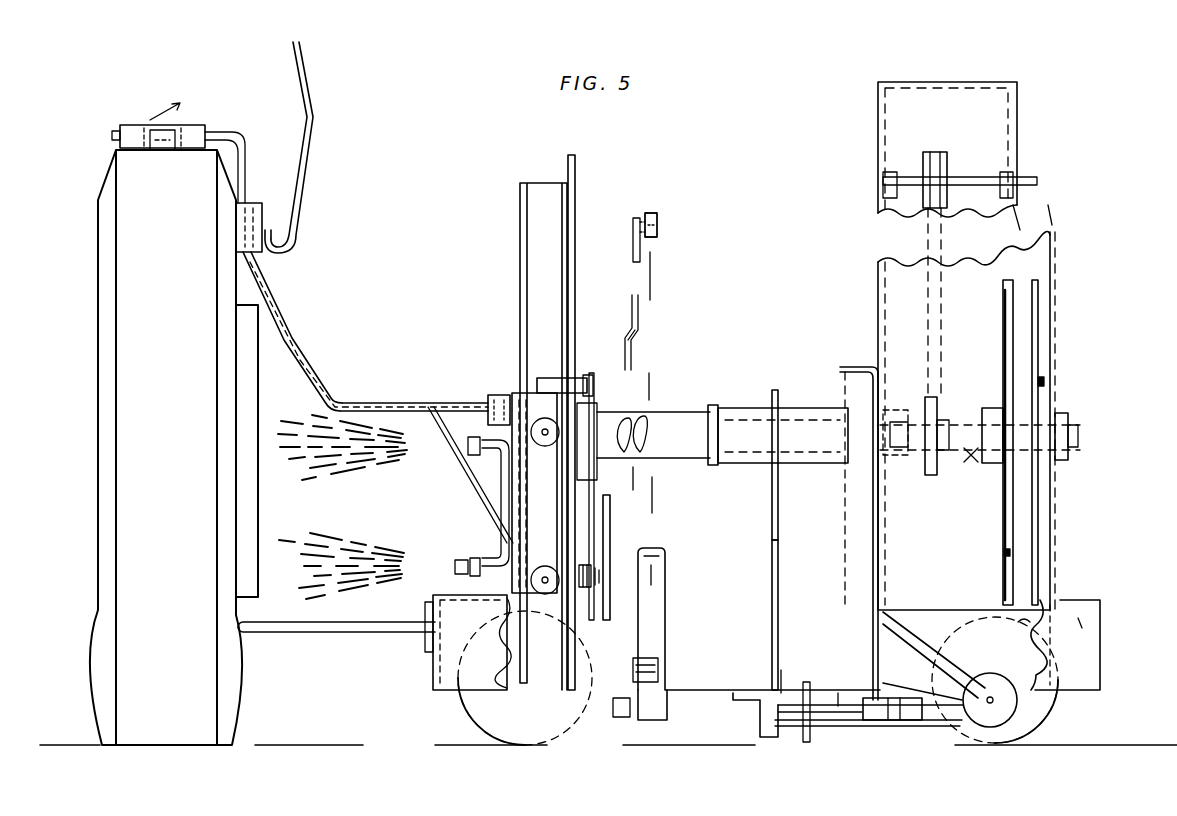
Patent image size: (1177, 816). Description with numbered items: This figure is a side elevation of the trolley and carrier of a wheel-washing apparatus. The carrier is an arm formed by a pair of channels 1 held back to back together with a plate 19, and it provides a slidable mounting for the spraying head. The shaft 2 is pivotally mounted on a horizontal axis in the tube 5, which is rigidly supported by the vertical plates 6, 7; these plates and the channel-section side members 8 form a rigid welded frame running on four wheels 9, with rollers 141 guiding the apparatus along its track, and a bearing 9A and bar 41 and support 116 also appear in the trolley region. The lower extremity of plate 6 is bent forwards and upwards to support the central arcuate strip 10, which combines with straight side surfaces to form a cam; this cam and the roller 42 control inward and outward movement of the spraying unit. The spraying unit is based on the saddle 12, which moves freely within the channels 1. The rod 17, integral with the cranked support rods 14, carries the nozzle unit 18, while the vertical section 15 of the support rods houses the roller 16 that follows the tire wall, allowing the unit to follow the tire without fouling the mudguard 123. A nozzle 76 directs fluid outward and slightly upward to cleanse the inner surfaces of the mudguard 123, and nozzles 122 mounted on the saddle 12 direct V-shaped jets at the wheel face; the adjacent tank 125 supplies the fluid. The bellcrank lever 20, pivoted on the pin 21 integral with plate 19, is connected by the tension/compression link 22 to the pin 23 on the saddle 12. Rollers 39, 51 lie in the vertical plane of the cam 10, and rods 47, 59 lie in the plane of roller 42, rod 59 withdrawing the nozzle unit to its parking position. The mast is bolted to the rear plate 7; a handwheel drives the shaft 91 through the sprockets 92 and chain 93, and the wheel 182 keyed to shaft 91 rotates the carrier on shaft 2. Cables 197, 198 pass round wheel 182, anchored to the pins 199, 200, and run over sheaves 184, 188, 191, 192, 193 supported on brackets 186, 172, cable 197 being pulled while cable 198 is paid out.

The channels 1 is at (530, 195).
The shaft 2 is at (692, 425).
The tube 5 is at (784, 414).
The vertical plate 6 is at (773, 505).
The vertical plate 7 is at (856, 365).
The side members 8 is at (440, 662).
The wheels 9 is at (472, 695).
The bearing 9A is at (900, 460).
The central arcuate strip 10 is at (668, 716).
The saddle 12 is at (505, 398).
The support rods 14 is at (362, 406).
The section of support rods 15 is at (256, 256).
The roller 16 is at (259, 200).
The rod 17 is at (228, 130).
The nozzle unit 18 is at (112, 136).
The plate 19 is at (577, 172).
The bellcrank lever 20 is at (610, 518).
The pin 21 is at (605, 579).
The tension/compression link 22 is at (596, 410).
The pin 23 is at (545, 380).
The roller 39 is at (658, 220).
The support bar 41 is at (292, 630).
The roller 42 is at (634, 666).
The rod 47 is at (632, 306).
The roller 51 is at (670, 224).
The rod 59 is at (630, 326).
The nozzle 76 is at (150, 122).
The shaft 91 is at (975, 452).
The sprockets 92 is at (943, 170).
The chain 93 is at (940, 241).
The support post 116 is at (652, 586).
The nozzles 122 is at (468, 448).
The mudguard 123 is at (306, 146).
The tank 125 is at (130, 215).
The rollers 141 is at (616, 718).
The bracket 172 is at (770, 740).
The wheel 182 is at (1022, 308).
The sheave 184 is at (1002, 730).
The bracket 186 is at (918, 628).
The sheave 188 is at (812, 742).
The sheave 191 is at (778, 708).
The sheave 192 is at (940, 406).
The sheave 193 is at (1020, 627).
The cable 197 is at (1080, 624).
The cable 198 is at (849, 728).
The pin 199 is at (1045, 381).
The pin 200 is at (1003, 552).